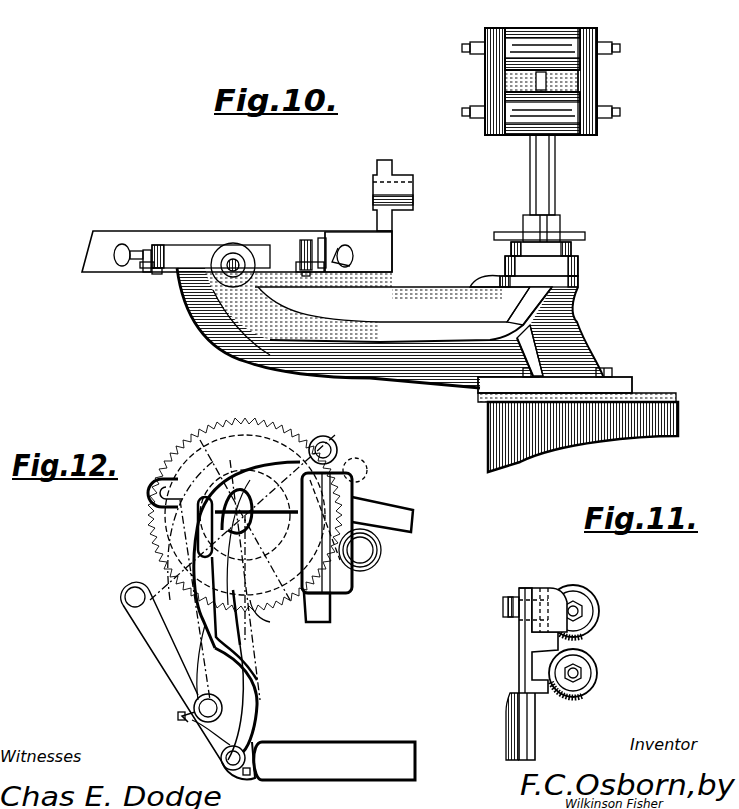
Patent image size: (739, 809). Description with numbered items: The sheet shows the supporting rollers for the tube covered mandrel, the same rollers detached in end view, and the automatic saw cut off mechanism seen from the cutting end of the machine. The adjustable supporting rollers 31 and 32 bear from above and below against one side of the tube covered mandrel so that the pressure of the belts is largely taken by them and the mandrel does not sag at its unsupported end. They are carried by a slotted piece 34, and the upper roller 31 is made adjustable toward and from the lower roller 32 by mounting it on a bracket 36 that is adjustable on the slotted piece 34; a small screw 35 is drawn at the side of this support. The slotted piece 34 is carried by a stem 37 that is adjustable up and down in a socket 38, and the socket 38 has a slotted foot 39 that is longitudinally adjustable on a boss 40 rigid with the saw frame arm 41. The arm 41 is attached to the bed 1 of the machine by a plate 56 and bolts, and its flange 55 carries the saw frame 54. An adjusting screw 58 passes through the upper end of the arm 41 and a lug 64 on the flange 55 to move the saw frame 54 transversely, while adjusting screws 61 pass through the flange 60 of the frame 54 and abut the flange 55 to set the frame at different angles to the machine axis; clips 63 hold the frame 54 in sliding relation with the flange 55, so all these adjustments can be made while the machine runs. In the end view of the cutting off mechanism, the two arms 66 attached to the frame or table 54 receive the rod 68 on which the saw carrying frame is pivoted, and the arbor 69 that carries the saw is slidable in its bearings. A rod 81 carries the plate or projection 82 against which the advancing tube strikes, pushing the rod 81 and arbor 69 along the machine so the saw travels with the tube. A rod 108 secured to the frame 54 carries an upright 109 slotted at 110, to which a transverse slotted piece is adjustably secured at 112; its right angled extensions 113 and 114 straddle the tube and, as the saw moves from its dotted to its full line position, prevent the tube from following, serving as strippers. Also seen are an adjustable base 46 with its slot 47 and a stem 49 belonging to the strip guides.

In FIG. 10, the bed 1 is at (492, 418).
In FIG. 10, the upper supporting roller 31 is at (520, 32).
In FIG. 11, the upper supporting roller 31 is at (588, 596).
In FIG. 10, the lower supporting roller 32 is at (516, 135).
In FIG. 11, the lower supporting roller 32 is at (578, 696).
In FIG. 10, the slotted piece 34 is at (490, 77).
In FIG. 11, the slotted piece 34 is at (520, 650).
In FIG. 11, the set screw 35 is at (503, 608).
In FIG. 11, the bracket 36 is at (545, 592).
In FIG. 10, the stem 37 is at (545, 188).
In FIG. 11, the stem 37 is at (515, 716).
In FIG. 10, the socket 38 is at (560, 224).
In FIG. 10, the slotted foot 39 is at (571, 250).
In FIG. 10, the boss 40 is at (578, 268).
In FIG. 10, the saw frame arm 41 is at (406, 292).
In FIG. 12, the adjustable base 46 is at (382, 556).
In FIG. 12, the slot 47 is at (210, 505).
In FIG. 12, the stem 49 is at (170, 570).
In FIG. 10, the saw frame 54 is at (288, 242).
In FIG. 12, the saw frame 54 is at (348, 768).
In FIG. 10, the flange 55 is at (211, 256).
In FIG. 10, the plate 56 is at (625, 384).
In FIG. 10, the adjusting screw 58 is at (232, 268).
In FIG. 10, the flange of the frame 60 is at (145, 270).
In FIG. 10, the adjusting screws 61 is at (118, 255).
In FIG. 10, the clips 63 is at (157, 273).
In FIG. 10, the lug 64 is at (214, 296).
In FIG. 10, the arms 66 is at (394, 166).
In FIG. 12, the arms 66 is at (142, 636).
In FIG. 12, the rod 68 is at (197, 720).
In FIG. 12, the arbor 69 is at (255, 612).
In FIG. 12, the rod 81 is at (338, 453).
In FIG. 12, the plate or projection 82 is at (352, 585).
In FIG. 12, the rod 108 is at (225, 772).
In FIG. 12, the upright 109 is at (255, 694).
In FIG. 12, the slot 110 is at (172, 446).
In FIG. 12, the adjustable securing point 112 is at (178, 503).
In FIG. 12, the right angled extension 113 is at (328, 618).
In FIG. 12, the right angled extension 114 is at (396, 518).